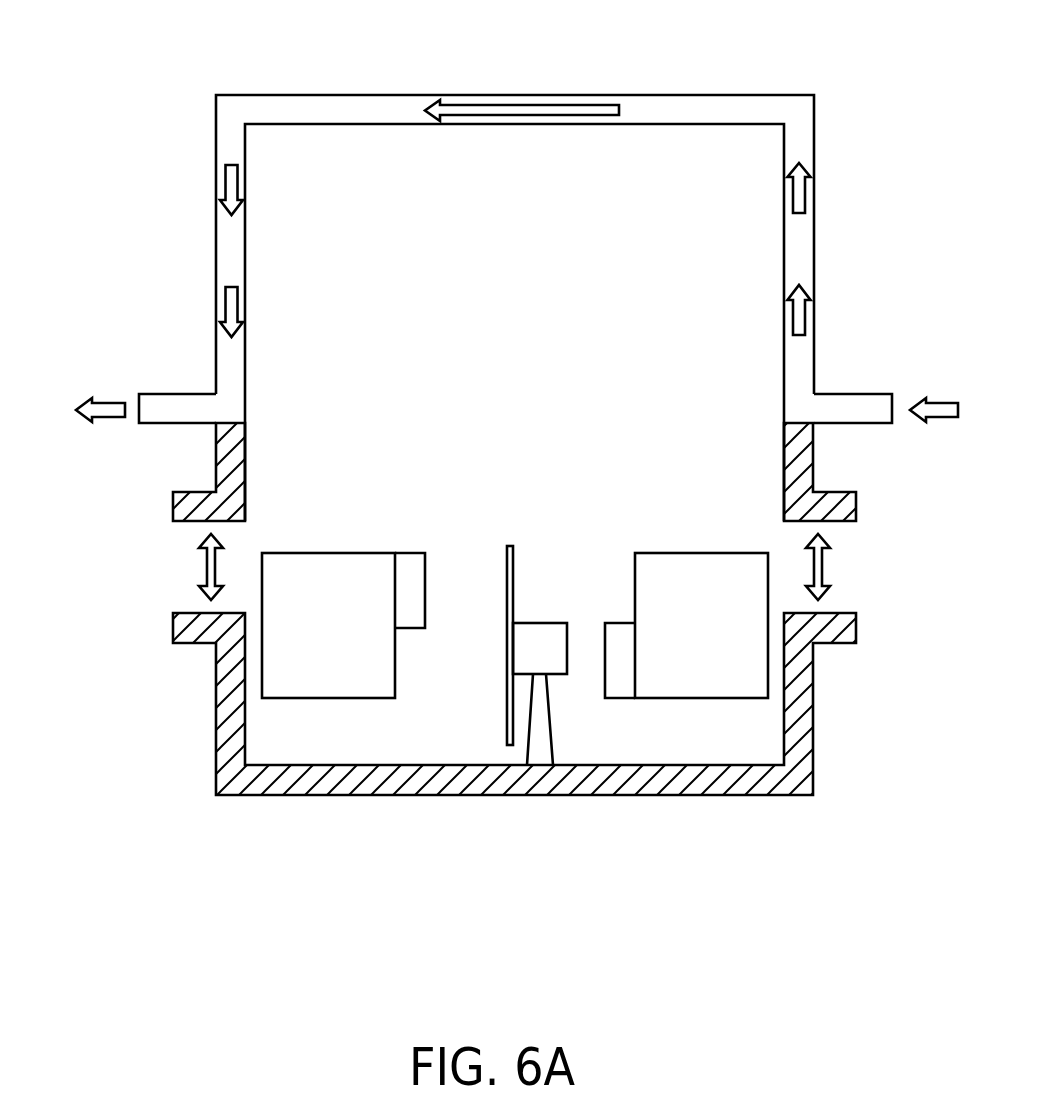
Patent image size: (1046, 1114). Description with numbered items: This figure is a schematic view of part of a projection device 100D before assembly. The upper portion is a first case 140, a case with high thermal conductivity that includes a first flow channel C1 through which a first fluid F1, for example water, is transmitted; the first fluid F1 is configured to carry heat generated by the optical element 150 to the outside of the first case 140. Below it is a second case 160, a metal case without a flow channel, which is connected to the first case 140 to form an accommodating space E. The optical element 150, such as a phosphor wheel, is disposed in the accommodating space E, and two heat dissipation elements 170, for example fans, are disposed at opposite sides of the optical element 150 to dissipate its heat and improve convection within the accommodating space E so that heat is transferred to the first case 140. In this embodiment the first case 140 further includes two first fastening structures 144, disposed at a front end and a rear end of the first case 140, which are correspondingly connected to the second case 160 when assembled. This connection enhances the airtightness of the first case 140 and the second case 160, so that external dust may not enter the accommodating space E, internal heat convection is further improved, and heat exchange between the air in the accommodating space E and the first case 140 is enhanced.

The projection device 100D is at (155, 74).
The first case 140 is at (805, 128).
The first fastening structure 144 is at (227, 466).
The optical element 150 is at (548, 633).
The second case 160 is at (804, 715).
The heat dissipation element 170 is at (332, 567).
The accommodating space E is at (340, 148).
The first fluid F1 is at (511, 108).
The first flow channel C1 is at (705, 110).